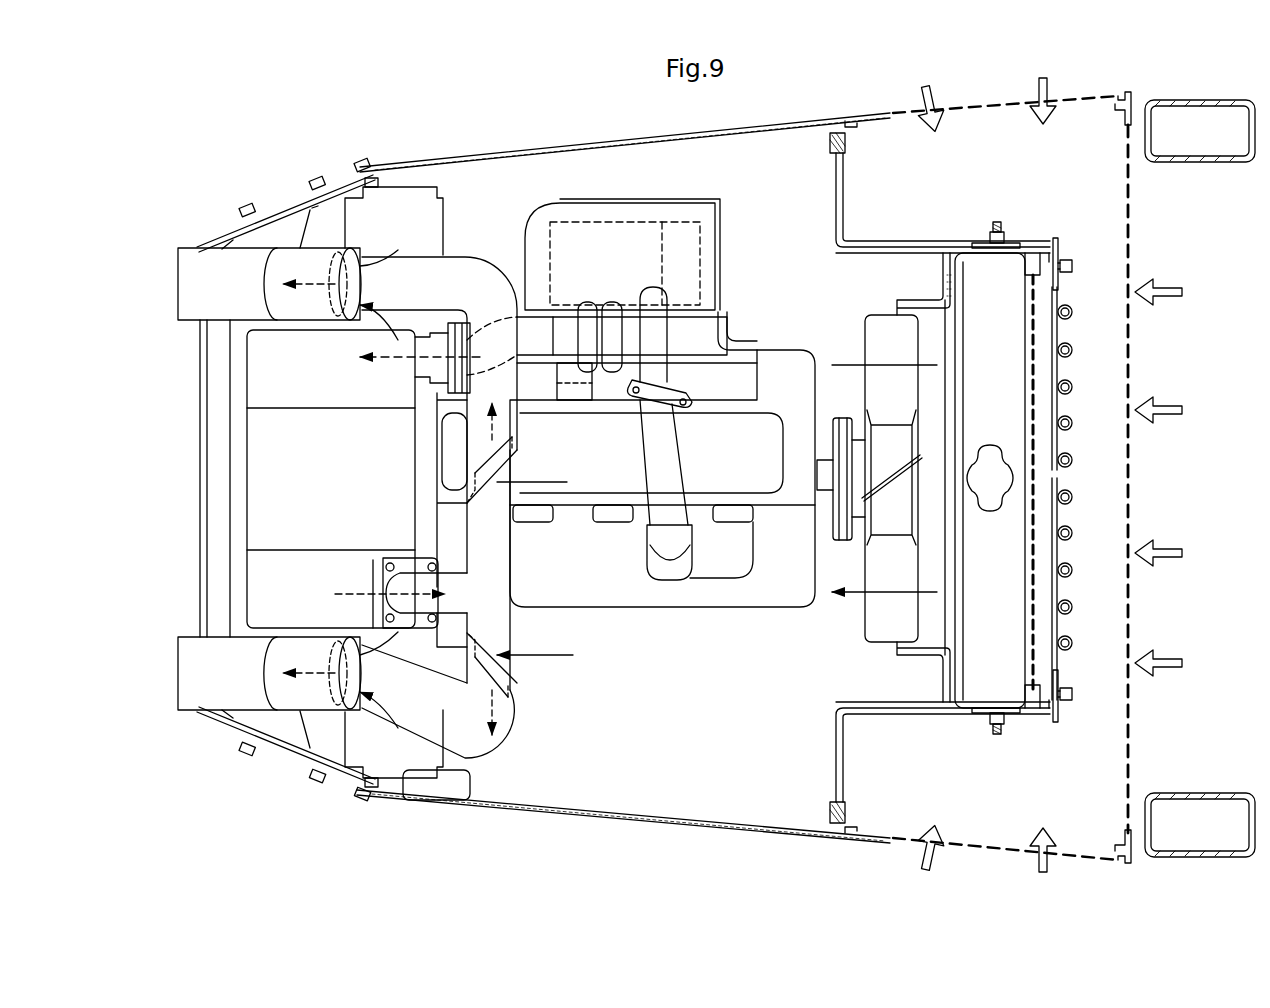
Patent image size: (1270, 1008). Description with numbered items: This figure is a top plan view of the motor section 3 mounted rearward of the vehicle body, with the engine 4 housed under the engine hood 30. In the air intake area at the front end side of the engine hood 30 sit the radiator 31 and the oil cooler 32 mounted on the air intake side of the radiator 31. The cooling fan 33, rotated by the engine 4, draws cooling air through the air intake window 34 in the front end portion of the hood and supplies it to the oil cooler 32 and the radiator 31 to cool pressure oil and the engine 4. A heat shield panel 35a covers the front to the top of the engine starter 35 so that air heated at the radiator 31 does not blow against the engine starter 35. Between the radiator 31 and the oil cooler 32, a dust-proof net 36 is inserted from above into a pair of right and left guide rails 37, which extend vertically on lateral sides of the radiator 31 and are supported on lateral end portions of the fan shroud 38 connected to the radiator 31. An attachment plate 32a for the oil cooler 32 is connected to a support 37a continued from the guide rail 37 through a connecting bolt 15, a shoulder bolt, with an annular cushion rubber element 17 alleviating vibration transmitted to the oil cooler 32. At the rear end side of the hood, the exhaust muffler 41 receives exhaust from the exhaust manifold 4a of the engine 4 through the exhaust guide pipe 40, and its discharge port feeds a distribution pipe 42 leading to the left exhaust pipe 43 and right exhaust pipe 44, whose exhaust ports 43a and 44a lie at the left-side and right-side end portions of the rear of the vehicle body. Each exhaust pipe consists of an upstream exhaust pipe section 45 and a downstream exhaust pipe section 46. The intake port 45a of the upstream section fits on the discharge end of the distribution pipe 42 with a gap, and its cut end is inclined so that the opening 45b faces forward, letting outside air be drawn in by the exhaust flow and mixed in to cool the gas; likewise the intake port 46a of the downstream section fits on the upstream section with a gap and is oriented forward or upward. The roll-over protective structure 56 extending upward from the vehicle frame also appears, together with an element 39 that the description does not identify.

The motor section 3 is at (283, 142).
The engine 4 is at (779, 360).
The exhaust manifold 4a is at (733, 347).
The connecting bolt 15 is at (1073, 264).
The annular cushion rubber element 17 is at (1069, 272).
The engine hood 30 is at (522, 150).
The radiator 31 is at (970, 268).
The oil cooler 32 is at (1082, 362).
The attachment plate 32a is at (1060, 250).
The cooling fan 33 is at (876, 640).
The air intake window 34 is at (888, 110).
The engine starter 35 is at (622, 230).
The heat shield panel 35a is at (722, 222).
The dust-proof net 36 is at (1035, 410).
The guide rails 37 is at (1018, 243).
The support 37a is at (1058, 250).
The fan shroud 38 is at (890, 245).
The side panel 39 is at (200, 462).
The exhaust guide pipe 40 is at (540, 313).
The exhaust muffler 41 is at (260, 497).
The distribution pipe 42 is at (458, 580).
The left exhaust pipe 43 is at (387, 470).
The exhaust port 43a is at (176, 255).
The right exhaust pipe 44 is at (174, 688).
The exhaust port 44a is at (144, 742).
The upstream exhaust pipe section 45 is at (468, 258).
The intake port 45a is at (507, 443).
The opening 45b is at (495, 480).
The downstream exhaust pipe section 46 is at (222, 250).
The intake port 46a is at (347, 196).
The roll-over protective structure 56 is at (1200, 162).